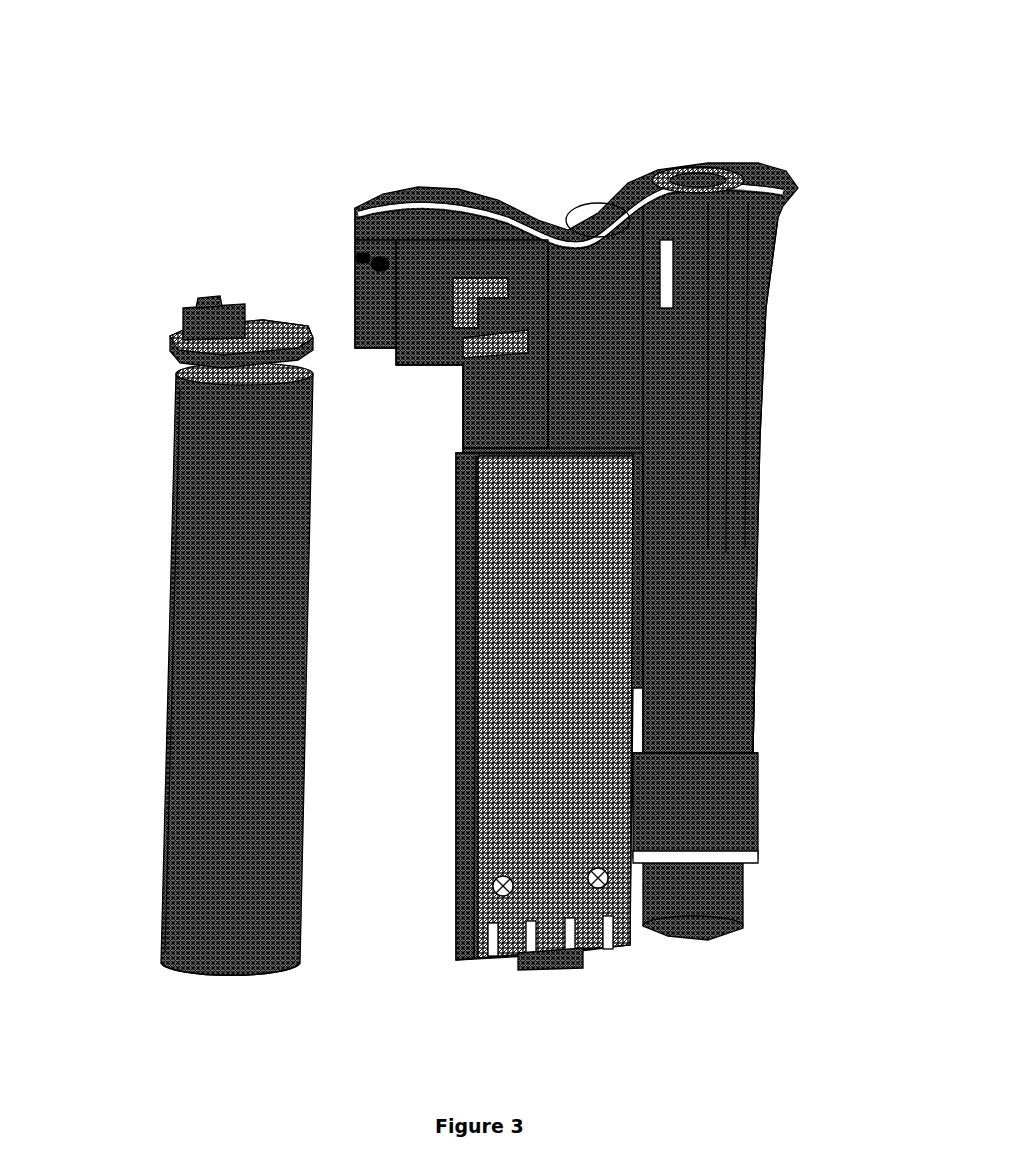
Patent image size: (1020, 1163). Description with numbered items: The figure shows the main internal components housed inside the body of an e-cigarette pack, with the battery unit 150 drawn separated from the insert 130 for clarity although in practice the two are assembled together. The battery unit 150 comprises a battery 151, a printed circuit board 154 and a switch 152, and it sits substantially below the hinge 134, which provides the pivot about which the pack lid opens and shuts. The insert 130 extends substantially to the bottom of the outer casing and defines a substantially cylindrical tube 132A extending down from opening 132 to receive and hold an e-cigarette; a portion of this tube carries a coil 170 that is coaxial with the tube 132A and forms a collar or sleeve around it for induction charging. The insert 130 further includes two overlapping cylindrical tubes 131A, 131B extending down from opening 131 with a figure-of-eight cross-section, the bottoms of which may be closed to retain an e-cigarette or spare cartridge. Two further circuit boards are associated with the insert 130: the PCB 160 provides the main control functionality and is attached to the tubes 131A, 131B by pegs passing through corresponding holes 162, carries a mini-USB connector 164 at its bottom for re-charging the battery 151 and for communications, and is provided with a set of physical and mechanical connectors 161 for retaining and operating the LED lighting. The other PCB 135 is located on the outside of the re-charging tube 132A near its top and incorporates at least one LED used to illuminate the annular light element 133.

The insert 130 is at (485, 245).
The opening 131 is at (570, 208).
The substantially cylindrical tube 131A is at (600, 315).
The substantially cylindrical tube 131B is at (520, 375).
The opening 132 is at (688, 160).
The substantially cylindrical tube 132A is at (712, 612).
The annular light element 133 is at (715, 160).
The hinge 134 is at (360, 220).
The printed circuit board 135 is at (675, 262).
The battery unit 150 is at (150, 526).
The battery 151 is at (235, 900).
The switch 152 is at (185, 298).
The printed circuit board 154 is at (170, 340).
The printed circuit board 160 is at (520, 818).
The physical and mechanical connectors 161 is at (487, 955).
The holes 162 is at (600, 885).
The mini-USB connector 164 is at (563, 958).
The coil 170 is at (683, 805).